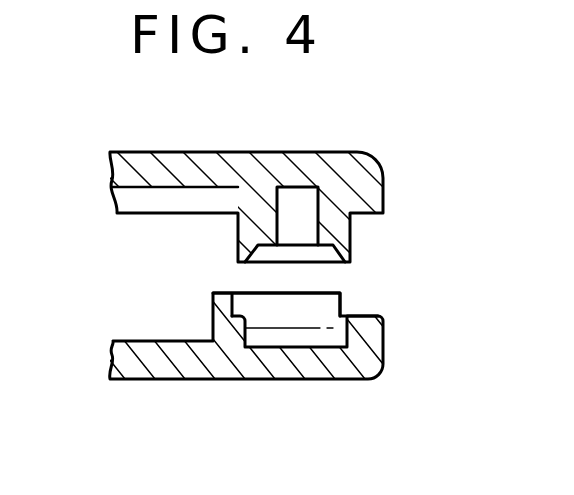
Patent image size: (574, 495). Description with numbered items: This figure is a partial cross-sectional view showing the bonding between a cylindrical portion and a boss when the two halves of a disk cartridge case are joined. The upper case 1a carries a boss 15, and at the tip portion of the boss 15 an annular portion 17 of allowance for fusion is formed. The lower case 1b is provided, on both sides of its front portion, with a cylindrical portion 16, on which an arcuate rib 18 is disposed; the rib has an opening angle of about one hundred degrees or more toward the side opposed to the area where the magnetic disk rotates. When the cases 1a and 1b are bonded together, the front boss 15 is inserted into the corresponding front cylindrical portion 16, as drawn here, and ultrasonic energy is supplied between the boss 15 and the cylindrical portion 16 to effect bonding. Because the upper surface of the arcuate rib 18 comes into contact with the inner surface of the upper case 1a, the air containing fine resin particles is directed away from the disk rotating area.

The upper case 1a is at (307, 159).
The lower case 1b is at (290, 365).
The boss 15 is at (241, 226).
The annular portion of allowance for fusion 17 is at (345, 249).
The arcuate rib 18 is at (214, 300).
The cylindrical portion 16 is at (370, 330).